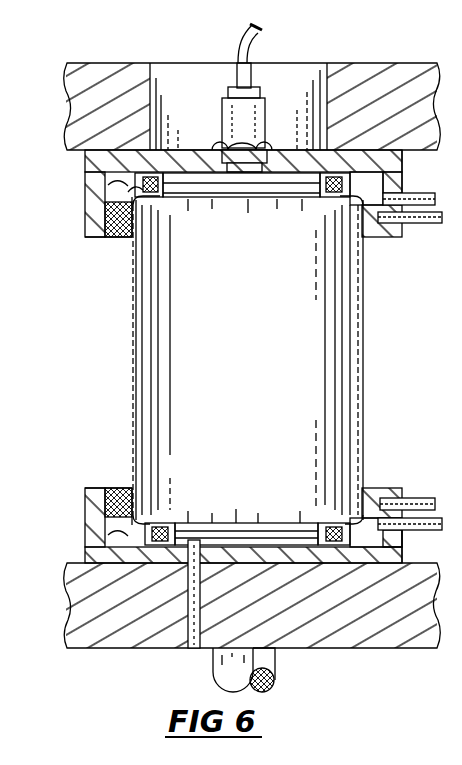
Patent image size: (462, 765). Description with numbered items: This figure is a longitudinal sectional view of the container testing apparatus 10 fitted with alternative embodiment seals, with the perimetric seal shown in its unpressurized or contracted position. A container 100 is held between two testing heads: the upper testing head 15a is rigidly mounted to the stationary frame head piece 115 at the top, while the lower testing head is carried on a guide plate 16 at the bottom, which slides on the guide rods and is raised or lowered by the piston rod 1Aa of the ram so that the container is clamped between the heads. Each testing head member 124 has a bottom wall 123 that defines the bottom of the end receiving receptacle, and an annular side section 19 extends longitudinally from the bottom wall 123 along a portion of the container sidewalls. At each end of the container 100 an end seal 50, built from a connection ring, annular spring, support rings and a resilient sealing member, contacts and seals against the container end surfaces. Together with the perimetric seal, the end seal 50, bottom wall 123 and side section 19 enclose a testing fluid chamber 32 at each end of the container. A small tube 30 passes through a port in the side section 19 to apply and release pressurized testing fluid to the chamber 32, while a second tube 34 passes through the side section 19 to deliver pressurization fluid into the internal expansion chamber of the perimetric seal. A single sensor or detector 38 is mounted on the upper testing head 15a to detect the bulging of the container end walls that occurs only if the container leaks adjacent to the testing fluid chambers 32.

The testing apparatus 10 is at (373, 63).
The frame head piece 115 is at (106, 82).
The sensor or detector 38 is at (252, 114).
The bottom wall 123 is at (98, 172).
The testing head member 124 is at (88, 200).
The end seal 50 is at (350, 179).
The testing fluid chamber 32 is at (129, 193).
The container 100 is at (364, 327).
The upper testing head 15a is at (378, 243).
The tube or conduit 30 is at (405, 193).
The tube or conduit 34 is at (425, 223).
The annular side section 19 is at (403, 157).
The guide plate 16 is at (373, 638).
The pin 1Aa is at (278, 657).